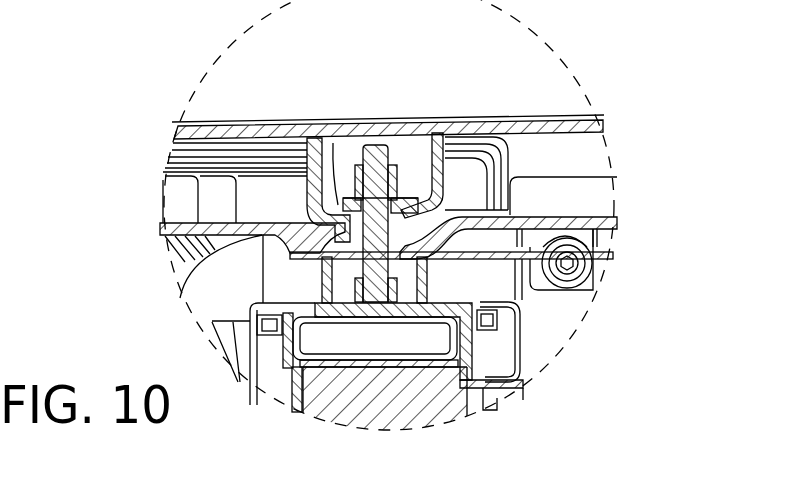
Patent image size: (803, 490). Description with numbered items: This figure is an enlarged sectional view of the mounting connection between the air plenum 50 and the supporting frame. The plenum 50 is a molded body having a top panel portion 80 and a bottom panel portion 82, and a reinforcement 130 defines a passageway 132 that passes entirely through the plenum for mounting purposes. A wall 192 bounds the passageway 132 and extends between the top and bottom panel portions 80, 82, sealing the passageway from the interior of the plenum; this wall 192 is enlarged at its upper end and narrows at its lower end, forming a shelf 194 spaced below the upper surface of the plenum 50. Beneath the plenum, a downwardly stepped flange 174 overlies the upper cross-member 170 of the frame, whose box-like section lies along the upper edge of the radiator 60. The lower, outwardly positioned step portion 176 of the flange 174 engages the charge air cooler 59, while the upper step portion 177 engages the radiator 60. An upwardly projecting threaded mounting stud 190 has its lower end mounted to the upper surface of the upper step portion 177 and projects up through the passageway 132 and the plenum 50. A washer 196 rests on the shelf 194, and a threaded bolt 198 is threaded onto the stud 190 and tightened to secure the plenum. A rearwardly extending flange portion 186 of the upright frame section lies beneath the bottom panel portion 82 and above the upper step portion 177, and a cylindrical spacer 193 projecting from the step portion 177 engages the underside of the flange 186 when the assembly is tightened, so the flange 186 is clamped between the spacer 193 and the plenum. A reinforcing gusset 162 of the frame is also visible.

The plenum 50 is at (560, 82).
The charge air cooler 59 is at (497, 406).
The radiator 60 is at (422, 413).
The top panel portion 80 is at (573, 118).
The bottom panel portion 82 is at (587, 217).
The reinforcement 130 is at (325, 140).
The passageway 132 is at (347, 203).
The reinforcing gusset 162 is at (284, 370).
The upper cross-member 170 is at (347, 348).
The downwardly stepped flange 174 is at (477, 352).
The lower step portion 176 is at (525, 375).
The upper step portion 177 is at (443, 283).
The rearwardly extending flange portion 186 is at (596, 287).
The threaded mounting stud 190 is at (369, 147).
The wall 192 is at (432, 133).
The spacer cylinder 193 is at (338, 281).
The shelf 194 is at (410, 212).
The washer 196 is at (408, 195).
The threaded bolt 198 is at (397, 188).